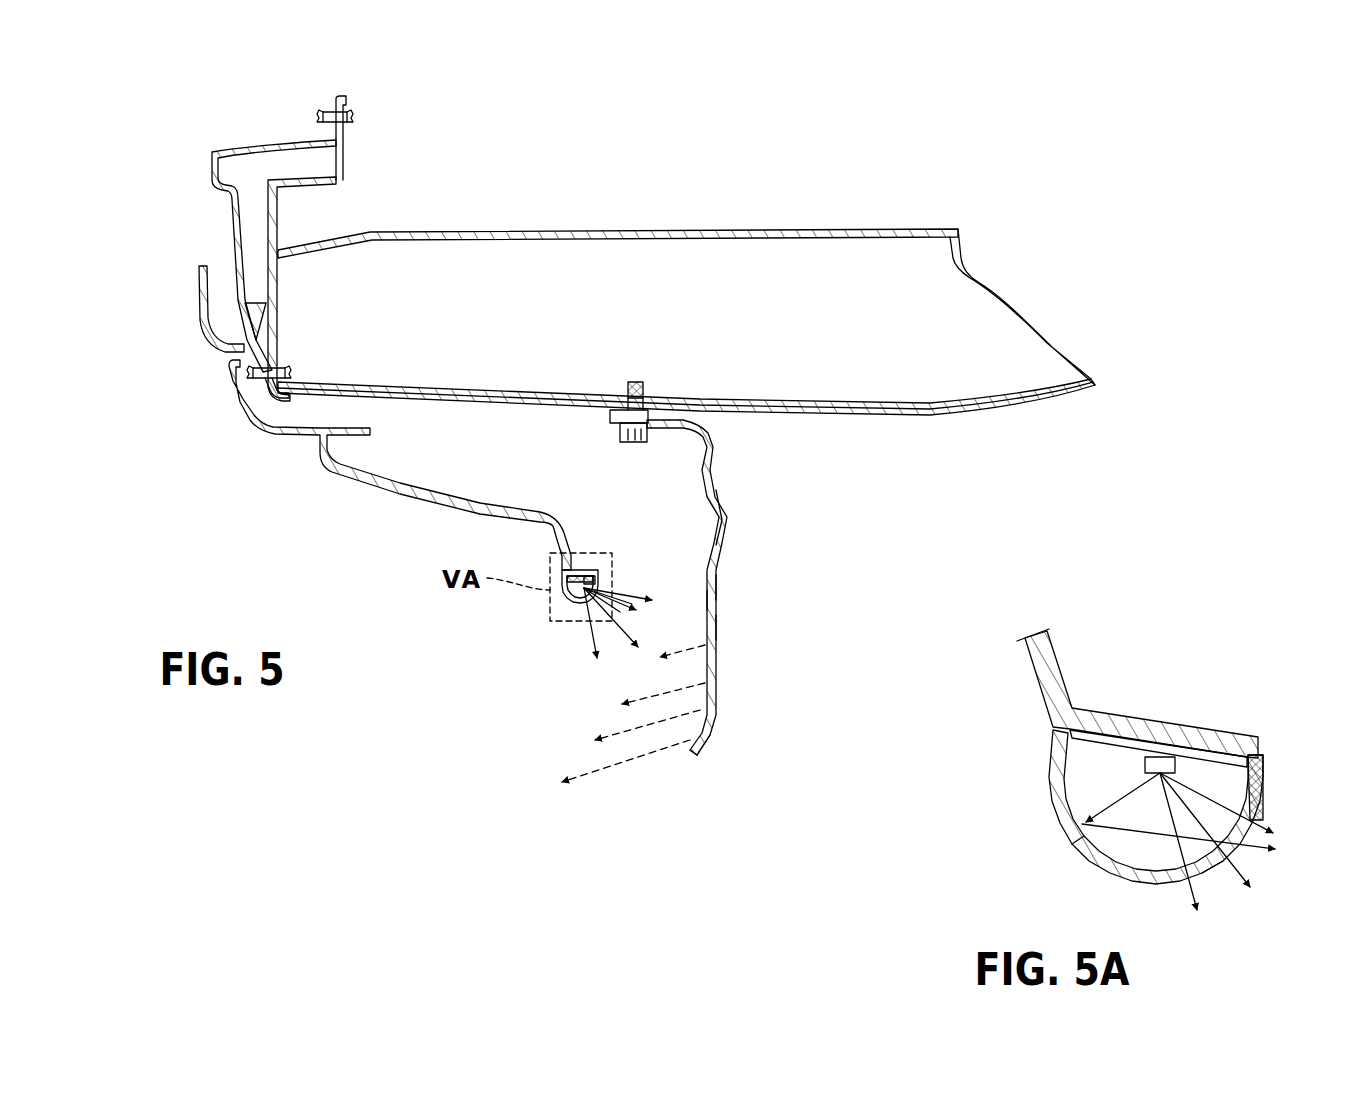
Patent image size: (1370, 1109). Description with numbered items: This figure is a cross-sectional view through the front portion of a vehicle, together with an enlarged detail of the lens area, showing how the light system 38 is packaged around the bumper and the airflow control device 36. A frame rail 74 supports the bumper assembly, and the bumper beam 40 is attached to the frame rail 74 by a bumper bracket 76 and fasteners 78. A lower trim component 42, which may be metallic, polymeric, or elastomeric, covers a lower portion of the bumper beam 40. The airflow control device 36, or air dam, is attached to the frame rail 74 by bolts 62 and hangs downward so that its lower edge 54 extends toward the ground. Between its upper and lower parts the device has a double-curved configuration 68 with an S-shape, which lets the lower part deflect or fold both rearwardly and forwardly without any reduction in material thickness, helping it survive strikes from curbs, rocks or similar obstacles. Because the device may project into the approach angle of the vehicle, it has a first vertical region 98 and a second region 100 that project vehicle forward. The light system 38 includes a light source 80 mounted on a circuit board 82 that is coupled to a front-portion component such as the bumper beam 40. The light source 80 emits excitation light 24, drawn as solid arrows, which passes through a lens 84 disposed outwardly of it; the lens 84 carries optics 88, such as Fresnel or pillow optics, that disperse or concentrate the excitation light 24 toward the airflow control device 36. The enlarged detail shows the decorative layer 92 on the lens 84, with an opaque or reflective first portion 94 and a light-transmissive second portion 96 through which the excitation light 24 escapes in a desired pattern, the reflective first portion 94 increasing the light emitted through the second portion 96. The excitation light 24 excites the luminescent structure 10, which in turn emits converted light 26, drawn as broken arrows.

In FIG. 5, the luminescent structure 10 is at (702, 598).
In FIG. 5, the excitation light 24 is at (605, 581).
In FIG. 5A, the excitation light 24 is at (1268, 825).
In FIG. 5, the converted light 26 is at (680, 650).
In FIG. 5, the airflow control device 36 is at (722, 582).
In FIG. 5, the light system 38 is at (676, 575).
In FIG. 5, the bumper beam 40 is at (247, 145).
In FIG. 5, the lower trim component 42 is at (388, 490).
In FIG. 5A, the lower trim component 42 is at (1055, 672).
In FIG. 5, the lower edge 54 is at (688, 757).
In FIG. 5, the bolts 62 is at (632, 442).
In FIG. 5, the double-curved configuration 68 is at (730, 517).
In FIG. 5, the frame rail 74 is at (825, 264).
In FIG. 5, the bumper bracket 76 is at (345, 185).
In FIG. 5, the fasteners 78 is at (354, 117).
In FIG. 5, the light source 80 is at (578, 572).
In FIG. 5A, the light source 80 is at (1163, 765).
In FIG. 5, the circuit board 82 is at (598, 572).
In FIG. 5A, the circuit board 82 is at (1130, 745).
In FIG. 5, the lens 84 is at (565, 592).
In FIG. 5A, the lens 84 is at (1090, 772).
In FIG. 5, the optics 88 is at (618, 572).
In FIG. 5A, the decorative layer 92 is at (1075, 850).
In FIG. 5A, the first portion 94 is at (1048, 817).
In FIG. 5A, the second portion 96 is at (1220, 872).
In FIG. 5, the first vertical region 98 is at (722, 633).
In FIG. 5, the second region 100 is at (713, 740).